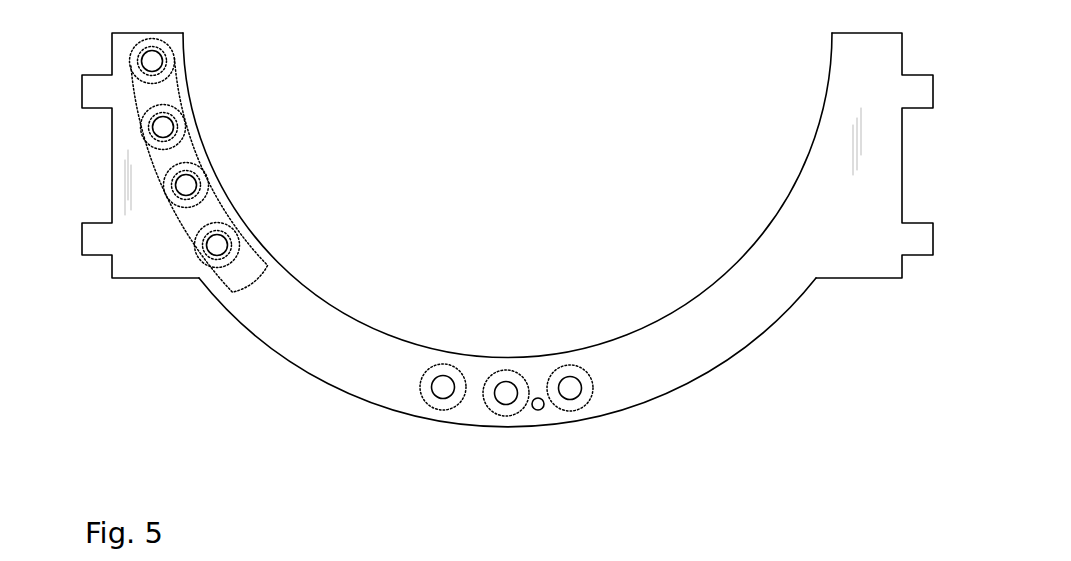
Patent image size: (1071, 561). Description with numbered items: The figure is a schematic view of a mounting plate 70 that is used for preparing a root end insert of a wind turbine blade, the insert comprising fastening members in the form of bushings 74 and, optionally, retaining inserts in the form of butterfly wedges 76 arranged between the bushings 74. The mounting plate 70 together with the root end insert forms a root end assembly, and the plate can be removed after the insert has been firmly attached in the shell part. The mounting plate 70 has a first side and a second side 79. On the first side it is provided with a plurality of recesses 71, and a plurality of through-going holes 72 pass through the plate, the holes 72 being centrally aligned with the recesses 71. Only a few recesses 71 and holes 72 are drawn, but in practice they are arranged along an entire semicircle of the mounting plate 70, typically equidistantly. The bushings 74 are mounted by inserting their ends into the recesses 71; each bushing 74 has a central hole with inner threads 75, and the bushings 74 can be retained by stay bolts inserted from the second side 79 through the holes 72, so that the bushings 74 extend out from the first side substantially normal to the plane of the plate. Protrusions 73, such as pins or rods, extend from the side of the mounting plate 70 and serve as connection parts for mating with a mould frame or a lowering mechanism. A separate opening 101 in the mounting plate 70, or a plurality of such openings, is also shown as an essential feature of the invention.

The mounting plate 70 is at (845, 50).
The recesses 71 is at (430, 377).
The through-going holes 72 is at (446, 386).
The protrusions 73 is at (97, 91).
The bushings 74 is at (173, 115).
The inner threads 75 is at (173, 127).
The butterfly wedges 76 is at (210, 211).
The second side 79 is at (697, 352).
The separate opening 101 is at (542, 412).